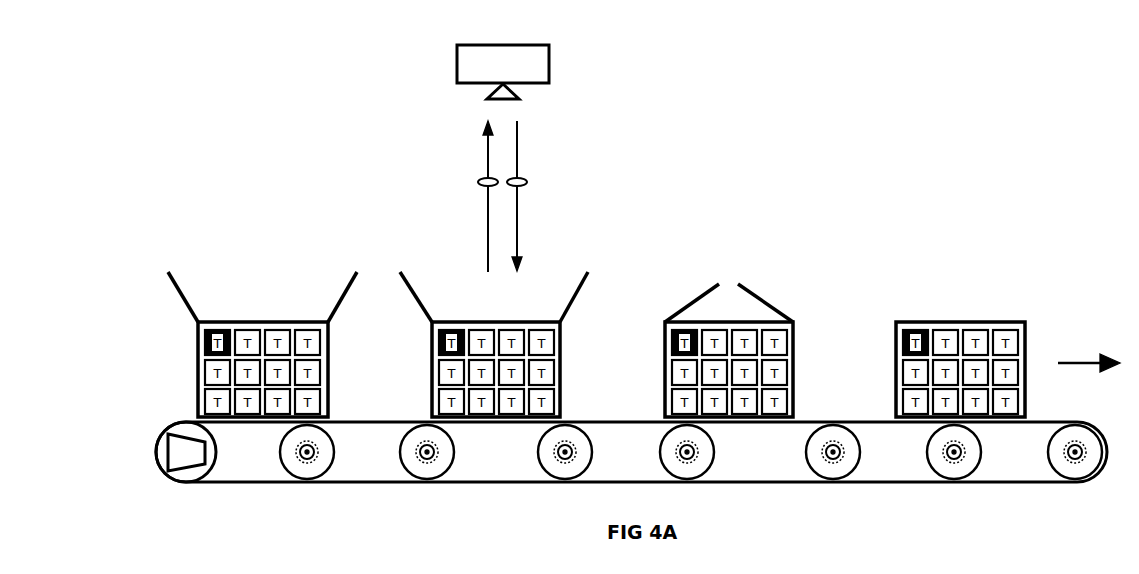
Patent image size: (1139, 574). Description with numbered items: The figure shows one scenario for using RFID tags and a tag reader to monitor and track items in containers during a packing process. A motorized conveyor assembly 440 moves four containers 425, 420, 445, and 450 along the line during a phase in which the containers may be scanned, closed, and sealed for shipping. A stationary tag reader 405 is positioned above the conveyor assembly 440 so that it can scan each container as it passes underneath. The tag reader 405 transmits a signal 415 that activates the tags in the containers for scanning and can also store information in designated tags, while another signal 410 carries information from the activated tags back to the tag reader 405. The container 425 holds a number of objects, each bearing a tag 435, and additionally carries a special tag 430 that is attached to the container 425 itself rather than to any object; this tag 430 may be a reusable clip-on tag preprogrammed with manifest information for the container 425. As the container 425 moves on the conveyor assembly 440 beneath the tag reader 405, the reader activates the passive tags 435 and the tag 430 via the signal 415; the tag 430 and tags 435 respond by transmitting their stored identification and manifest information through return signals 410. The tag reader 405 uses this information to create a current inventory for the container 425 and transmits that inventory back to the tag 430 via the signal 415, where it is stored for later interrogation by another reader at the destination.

The tag reader 405 is at (457, 70).
The signal 410 is at (480, 180).
The signal 415 is at (525, 180).
The container 420 is at (525, 322).
The container 425 is at (253, 344).
The tag 430 is at (206, 349).
The tags 435 is at (205, 375).
The conveyor assembly 440 is at (181, 483).
The container 445 is at (757, 322).
The container 450 is at (992, 322).